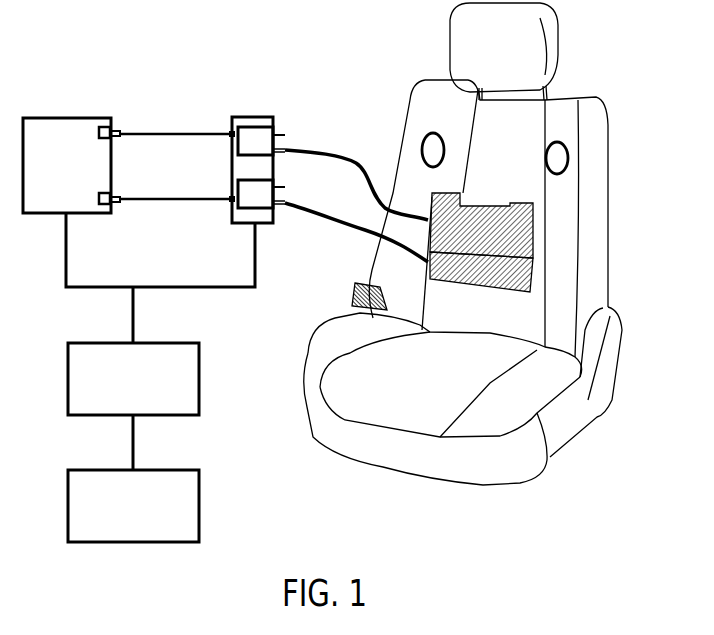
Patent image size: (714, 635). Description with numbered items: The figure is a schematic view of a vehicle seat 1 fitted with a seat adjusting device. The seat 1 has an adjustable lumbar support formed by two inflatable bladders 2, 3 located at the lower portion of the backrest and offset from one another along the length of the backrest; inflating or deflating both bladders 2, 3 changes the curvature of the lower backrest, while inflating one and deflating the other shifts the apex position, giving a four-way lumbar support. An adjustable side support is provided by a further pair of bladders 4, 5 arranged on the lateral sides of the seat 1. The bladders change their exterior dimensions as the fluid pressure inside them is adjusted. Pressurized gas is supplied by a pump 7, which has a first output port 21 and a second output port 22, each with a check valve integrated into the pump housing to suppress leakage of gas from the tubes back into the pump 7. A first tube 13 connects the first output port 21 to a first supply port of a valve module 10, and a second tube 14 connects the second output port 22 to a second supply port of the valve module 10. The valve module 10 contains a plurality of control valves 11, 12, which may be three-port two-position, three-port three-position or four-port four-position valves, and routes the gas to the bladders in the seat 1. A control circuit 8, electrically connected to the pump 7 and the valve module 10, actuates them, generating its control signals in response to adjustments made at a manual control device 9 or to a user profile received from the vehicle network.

The vehicle seat 1 is at (580, 69).
The inflatable bladder 2 is at (532, 245).
The inflatable bladder 3 is at (532, 268).
The side support bladder 4 is at (423, 143).
The side support bladder 5 is at (567, 163).
The pump 7 is at (35, 118).
The control circuit 8 is at (68, 400).
The manual control device 9 is at (68, 527).
The valve module 10 is at (232, 117).
The control valve 11 is at (258, 128).
The control valve 12 is at (248, 207).
The first tube 13 is at (302, 152).
The second tube 14 is at (333, 222).
The first output port 21 is at (120, 126).
The second output port 22 is at (120, 208).